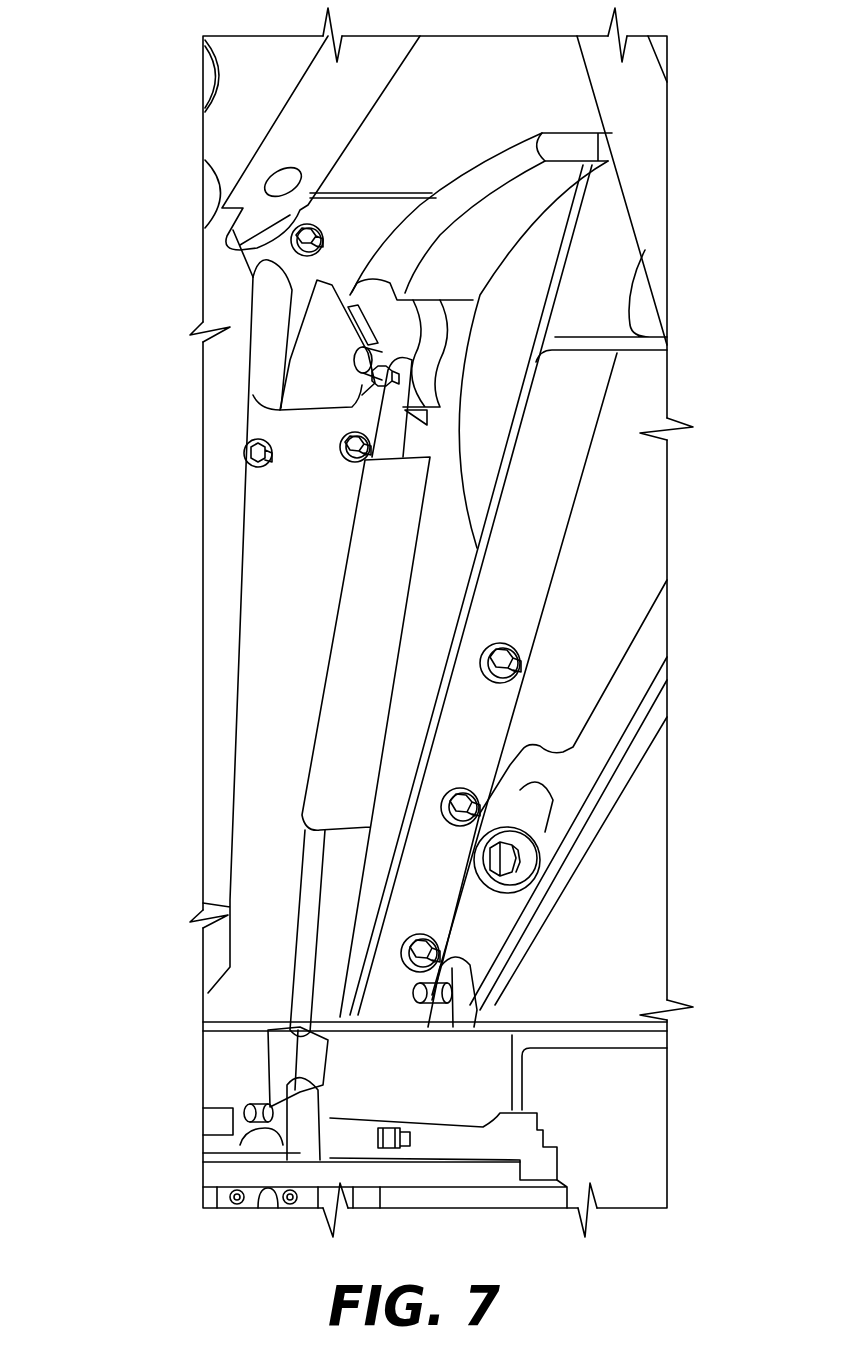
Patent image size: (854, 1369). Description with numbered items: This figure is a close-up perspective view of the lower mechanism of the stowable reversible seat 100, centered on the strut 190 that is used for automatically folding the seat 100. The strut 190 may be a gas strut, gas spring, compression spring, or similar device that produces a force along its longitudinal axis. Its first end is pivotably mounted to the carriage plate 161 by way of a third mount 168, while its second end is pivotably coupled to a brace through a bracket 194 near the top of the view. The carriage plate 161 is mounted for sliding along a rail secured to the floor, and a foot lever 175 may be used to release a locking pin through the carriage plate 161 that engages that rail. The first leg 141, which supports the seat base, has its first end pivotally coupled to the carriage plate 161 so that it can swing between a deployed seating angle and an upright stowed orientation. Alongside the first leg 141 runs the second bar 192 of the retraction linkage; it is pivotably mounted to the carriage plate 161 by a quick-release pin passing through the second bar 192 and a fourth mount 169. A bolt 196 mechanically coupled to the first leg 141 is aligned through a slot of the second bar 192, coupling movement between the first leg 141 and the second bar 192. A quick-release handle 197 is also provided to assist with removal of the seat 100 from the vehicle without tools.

The seat 100 is at (156, 53).
The first leg 141 is at (643, 400).
The carriage plate 161 is at (427, 1180).
The third mount 168 is at (317, 1133).
The fourth mount 169 is at (503, 1003).
The foot lever 175 is at (630, 1043).
The strut 190 is at (351, 648).
The second bar 192 is at (657, 641).
The bracket 194 is at (292, 274).
The bolt 196 is at (493, 867).
The quick-release handle 197 is at (588, 148).